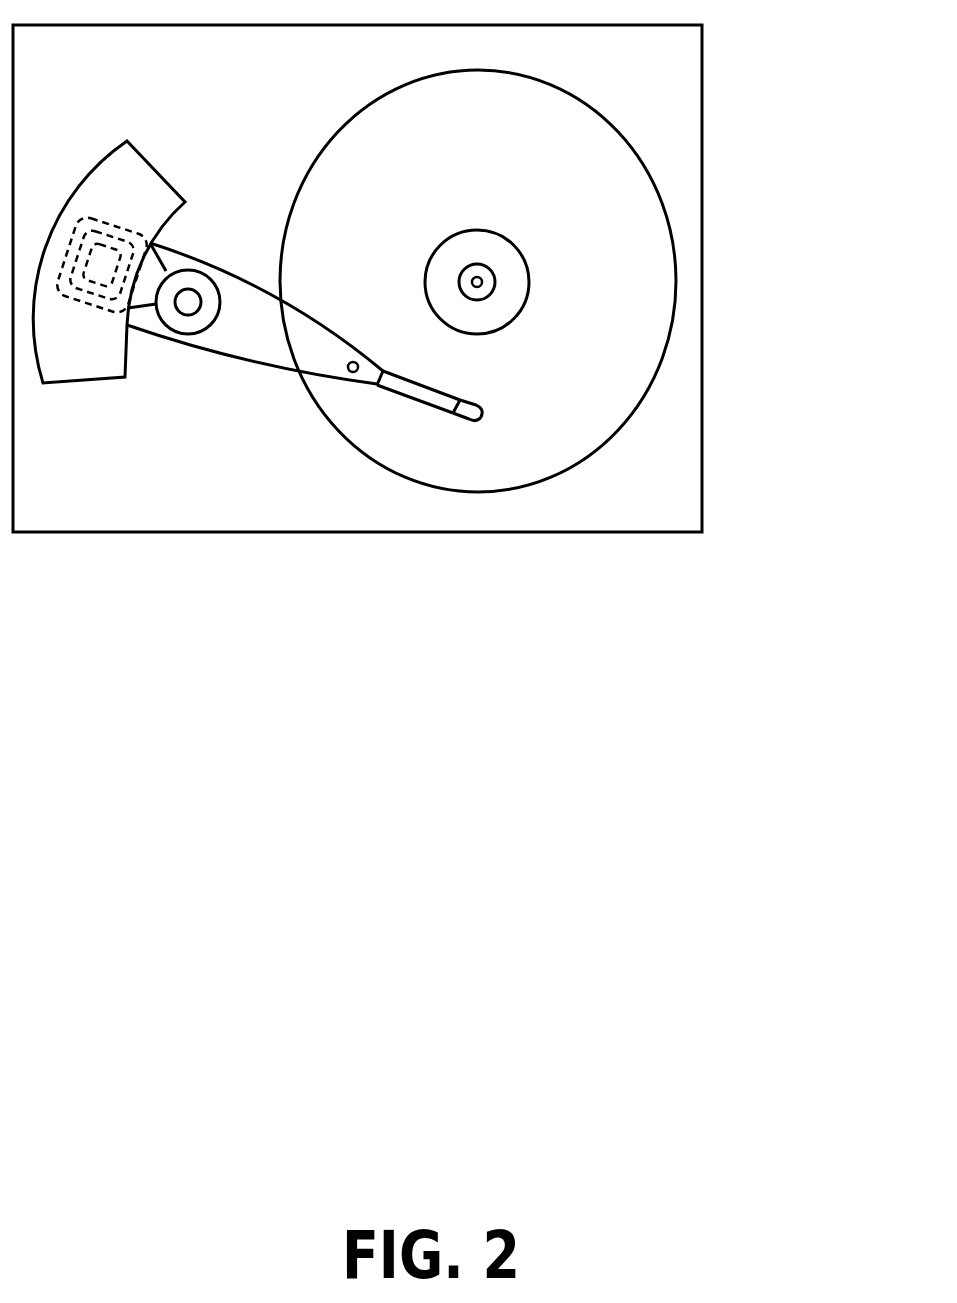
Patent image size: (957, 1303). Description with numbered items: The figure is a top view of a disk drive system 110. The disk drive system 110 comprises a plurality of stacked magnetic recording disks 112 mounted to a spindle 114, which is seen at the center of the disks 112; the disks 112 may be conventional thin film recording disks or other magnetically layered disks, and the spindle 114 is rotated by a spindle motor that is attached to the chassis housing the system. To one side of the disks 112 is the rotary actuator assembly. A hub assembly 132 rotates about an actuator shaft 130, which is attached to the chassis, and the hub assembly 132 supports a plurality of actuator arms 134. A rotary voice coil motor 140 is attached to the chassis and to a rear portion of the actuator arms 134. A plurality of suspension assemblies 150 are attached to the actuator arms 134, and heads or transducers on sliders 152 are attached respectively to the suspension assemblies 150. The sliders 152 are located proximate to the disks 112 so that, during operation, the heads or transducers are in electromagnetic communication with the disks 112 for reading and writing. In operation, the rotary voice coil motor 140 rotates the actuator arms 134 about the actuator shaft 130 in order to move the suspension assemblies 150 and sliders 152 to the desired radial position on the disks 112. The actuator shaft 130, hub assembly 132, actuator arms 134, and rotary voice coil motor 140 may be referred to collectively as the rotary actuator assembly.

The disk drive system 110 is at (748, 150).
The magnetic recording disks 112 is at (516, 162).
The spindle 114 is at (481, 264).
The actuator shaft 130 is at (184, 309).
The hub assembly 132 is at (220, 266).
The actuator arms 134 is at (298, 327).
The rotary voice coil motor 140 is at (127, 182).
The suspension assemblies 150 is at (398, 383).
The sliders 152 is at (483, 417).